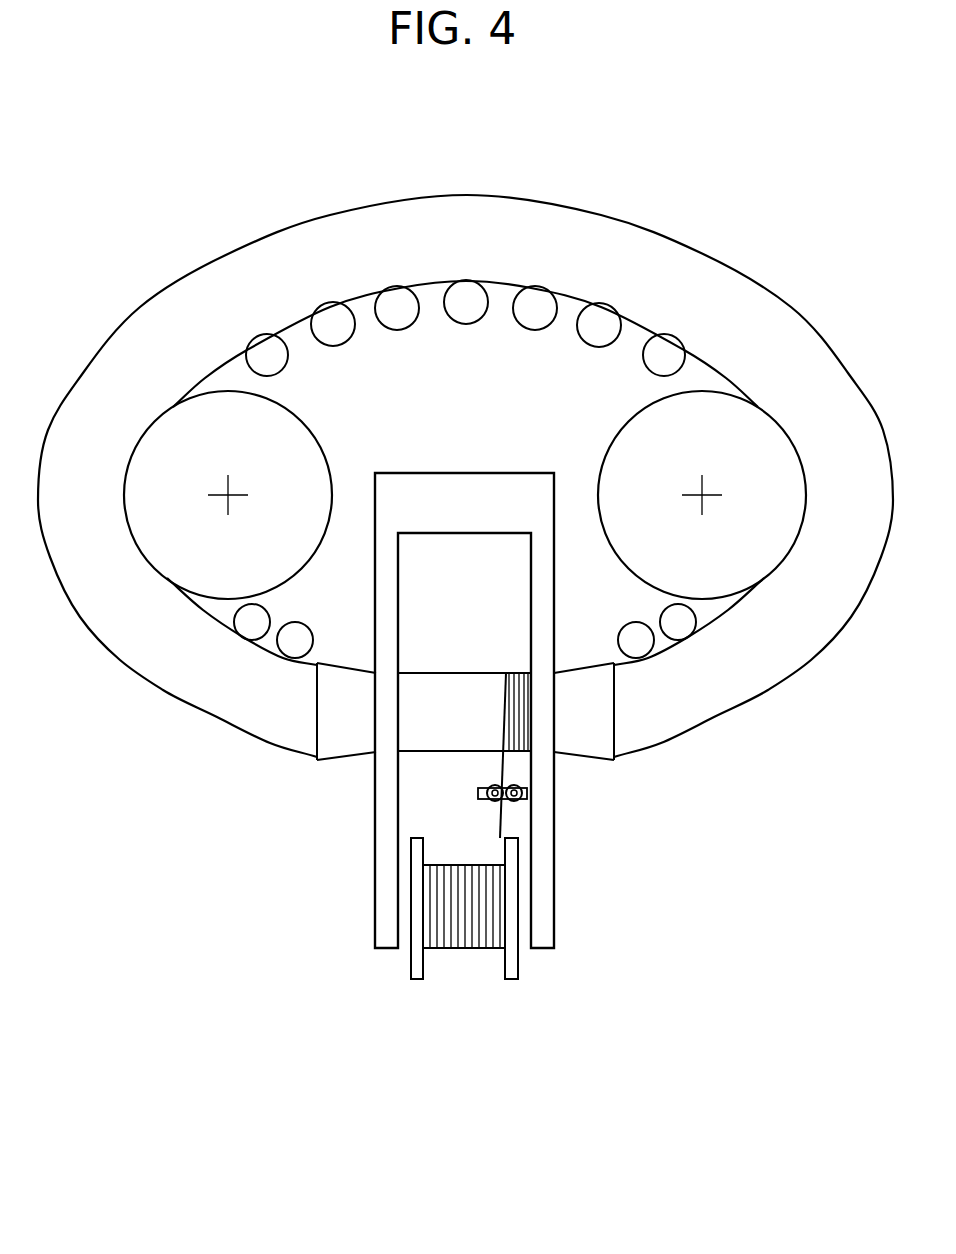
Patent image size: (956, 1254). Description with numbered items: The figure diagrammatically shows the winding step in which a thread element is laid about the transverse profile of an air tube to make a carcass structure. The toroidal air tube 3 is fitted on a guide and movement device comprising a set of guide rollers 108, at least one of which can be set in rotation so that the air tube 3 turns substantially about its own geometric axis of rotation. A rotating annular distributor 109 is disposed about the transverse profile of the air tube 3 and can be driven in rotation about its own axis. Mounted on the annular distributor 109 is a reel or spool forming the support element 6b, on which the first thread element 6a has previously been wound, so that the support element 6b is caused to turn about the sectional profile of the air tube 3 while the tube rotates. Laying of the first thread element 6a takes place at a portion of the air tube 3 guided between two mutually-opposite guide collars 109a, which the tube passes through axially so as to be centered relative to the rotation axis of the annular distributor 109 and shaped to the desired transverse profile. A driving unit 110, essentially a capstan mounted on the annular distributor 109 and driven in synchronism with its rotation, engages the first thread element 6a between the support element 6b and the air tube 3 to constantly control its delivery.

The air tube 3 is at (217, 705).
The guide rollers 108 is at (340, 333).
The annular distributor 109 is at (375, 878).
The guide collars 109a is at (335, 743).
The first thread element 6a is at (505, 763).
The support element 6b is at (418, 970).
The driving unit 110 is at (513, 801).